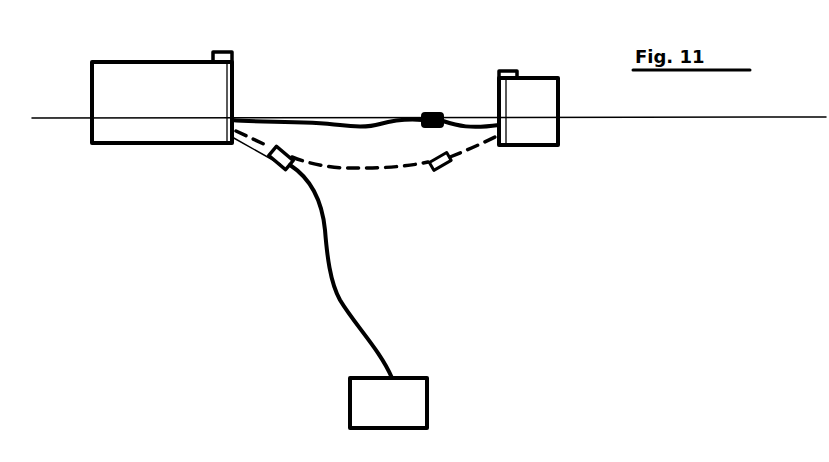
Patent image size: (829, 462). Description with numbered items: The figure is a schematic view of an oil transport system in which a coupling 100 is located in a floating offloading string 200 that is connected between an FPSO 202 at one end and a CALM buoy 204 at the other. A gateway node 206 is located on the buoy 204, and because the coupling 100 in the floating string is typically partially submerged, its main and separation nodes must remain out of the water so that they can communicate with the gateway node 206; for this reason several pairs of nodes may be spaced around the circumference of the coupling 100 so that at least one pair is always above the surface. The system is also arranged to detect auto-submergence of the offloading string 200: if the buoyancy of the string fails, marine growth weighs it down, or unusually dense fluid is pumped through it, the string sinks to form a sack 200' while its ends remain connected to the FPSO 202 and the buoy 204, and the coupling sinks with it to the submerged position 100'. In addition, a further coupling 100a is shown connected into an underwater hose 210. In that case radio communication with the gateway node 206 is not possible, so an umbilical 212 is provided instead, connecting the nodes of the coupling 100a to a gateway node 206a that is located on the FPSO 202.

The coupling 100 is at (405, 90).
The submerged position of the coupling 100' is at (455, 193).
The coupling 100a is at (277, 166).
The floating offloading string 200 is at (365, 90).
The sack 200' is at (367, 180).
The FPSO 202 is at (113, 145).
The CALM buoy 204 is at (543, 142).
The gateway node 206 is at (499, 74).
The gateway node 206a is at (268, 38).
The underwater hose 210 is at (328, 272).
The umbilical 212 is at (240, 146).